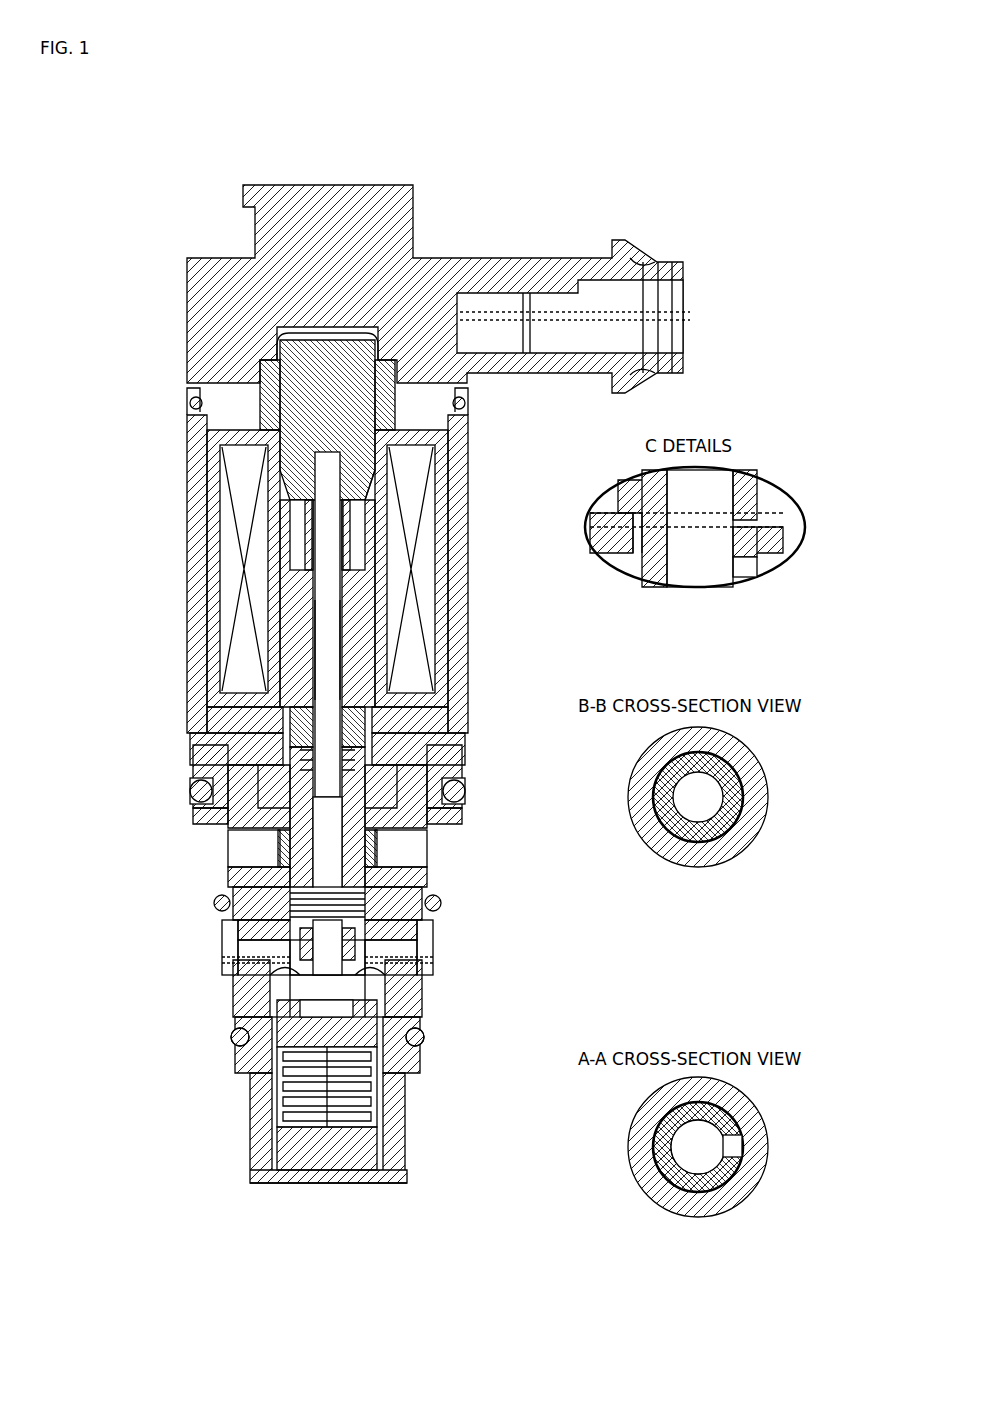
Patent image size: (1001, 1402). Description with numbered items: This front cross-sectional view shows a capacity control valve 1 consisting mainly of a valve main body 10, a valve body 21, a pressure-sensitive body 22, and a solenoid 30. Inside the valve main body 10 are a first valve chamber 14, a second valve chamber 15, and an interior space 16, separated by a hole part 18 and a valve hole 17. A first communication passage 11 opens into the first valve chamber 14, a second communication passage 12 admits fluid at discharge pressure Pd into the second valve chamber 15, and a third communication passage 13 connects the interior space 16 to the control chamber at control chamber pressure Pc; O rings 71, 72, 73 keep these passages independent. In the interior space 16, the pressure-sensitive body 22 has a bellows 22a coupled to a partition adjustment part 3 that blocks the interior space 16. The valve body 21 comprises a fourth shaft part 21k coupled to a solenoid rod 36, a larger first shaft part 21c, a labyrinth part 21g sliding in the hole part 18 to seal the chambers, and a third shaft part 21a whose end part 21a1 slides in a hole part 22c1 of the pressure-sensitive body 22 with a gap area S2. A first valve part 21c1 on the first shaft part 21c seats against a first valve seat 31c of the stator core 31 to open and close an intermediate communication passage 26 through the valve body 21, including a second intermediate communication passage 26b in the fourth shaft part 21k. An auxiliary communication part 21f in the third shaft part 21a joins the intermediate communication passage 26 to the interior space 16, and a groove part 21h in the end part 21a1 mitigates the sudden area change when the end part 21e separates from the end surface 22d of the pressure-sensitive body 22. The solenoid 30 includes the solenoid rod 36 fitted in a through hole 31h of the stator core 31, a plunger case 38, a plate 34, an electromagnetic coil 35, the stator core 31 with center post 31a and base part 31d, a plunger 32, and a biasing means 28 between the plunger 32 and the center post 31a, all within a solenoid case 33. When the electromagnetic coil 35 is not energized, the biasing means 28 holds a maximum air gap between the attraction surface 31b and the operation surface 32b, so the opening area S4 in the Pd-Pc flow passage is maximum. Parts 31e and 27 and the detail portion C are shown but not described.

The capacity control valve 1 is at (545, 216).
The plunger case 38 is at (253, 350).
The plate 34 is at (250, 382).
The solenoid 30 is at (162, 438).
The plunger 32 is at (345, 420).
The operation surface 32b is at (367, 500).
The attraction surface 31b is at (360, 522).
The through hole 31h is at (335, 598).
The biasing means 28 is at (300, 520).
The ring 31e is at (292, 548).
The solenoid rod 36 is at (325, 590).
The electromagnetic coil 35 is at (250, 620).
The solenoid case 33 is at (215, 636).
The center post 31a is at (225, 700).
The stator core 31 is at (98, 685).
The base part 31d is at (200, 745).
The O ring 73 is at (198, 785).
The first valve seat 31c is at (295, 820).
The valve main body 10 is at (324, 988).
The first communication passage 11 is at (245, 845).
The first valve chamber 14 is at (240, 866).
The hole part 18 is at (300, 890).
The O ring 72 is at (216, 905).
The second communication passage 12 is at (220, 945).
The second valve chamber 15 is at (290, 950).
The valve hole 17 is at (238, 975).
The end part 21e is at (268, 1020).
The O ring 71 is at (232, 1040).
The interior space 16 is at (250, 1065).
The third communication passage 13 is at (255, 1100).
The partition adjustment part 3 is at (290, 1178).
The end surface 22d is at (335, 1175).
The fourth shaft part 21k is at (425, 745).
The spring 27 is at (425, 762).
The second intermediate communication passage 26b is at (430, 787).
The intermediate communication passage 26 is at (431, 822).
The first valve part 21c1 is at (405, 828).
The first shaft part 21c is at (405, 865).
The labyrinth part 21g is at (430, 900).
The valve body 21 is at (366, 957).
The third shaft part 21a is at (430, 985).
The auxiliary communication part 21f is at (425, 1040).
The pressure-sensitive body 22 is at (378, 1087).
The bellows 22a is at (405, 1115).
The end part 21a1 is at (692, 840).
The groove part 21h is at (742, 1147).
The hole part 22c1 is at (660, 1180).
The gap area S2 is at (650, 850).
The opening area S4 is at (690, 520).
The discharge pressure Pd is at (210, 940).
The control chamber pressure Pc is at (211, 1160).
The detail portion C is at (440, 920).